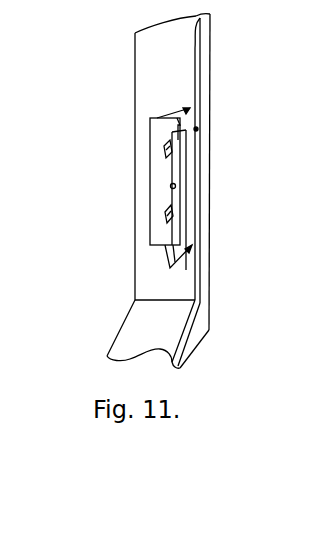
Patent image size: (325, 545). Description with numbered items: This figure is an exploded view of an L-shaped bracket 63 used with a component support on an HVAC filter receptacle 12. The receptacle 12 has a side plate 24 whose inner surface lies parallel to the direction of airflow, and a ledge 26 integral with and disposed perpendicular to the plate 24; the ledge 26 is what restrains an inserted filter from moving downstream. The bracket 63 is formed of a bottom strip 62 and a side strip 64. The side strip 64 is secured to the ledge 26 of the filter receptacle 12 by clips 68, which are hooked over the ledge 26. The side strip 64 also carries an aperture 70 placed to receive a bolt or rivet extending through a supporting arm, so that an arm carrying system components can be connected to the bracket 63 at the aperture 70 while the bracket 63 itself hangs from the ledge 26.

The filter receptacle 12 is at (120, 240).
The side plate 24 is at (158, 65).
The ledge 26 is at (205, 70).
The bottom strip 62 is at (200, 100).
The L-shaped bracket 63 is at (157, 168).
The side strip 64 is at (173, 238).
The clip 68 is at (178, 163).
The aperture 70 is at (177, 185).